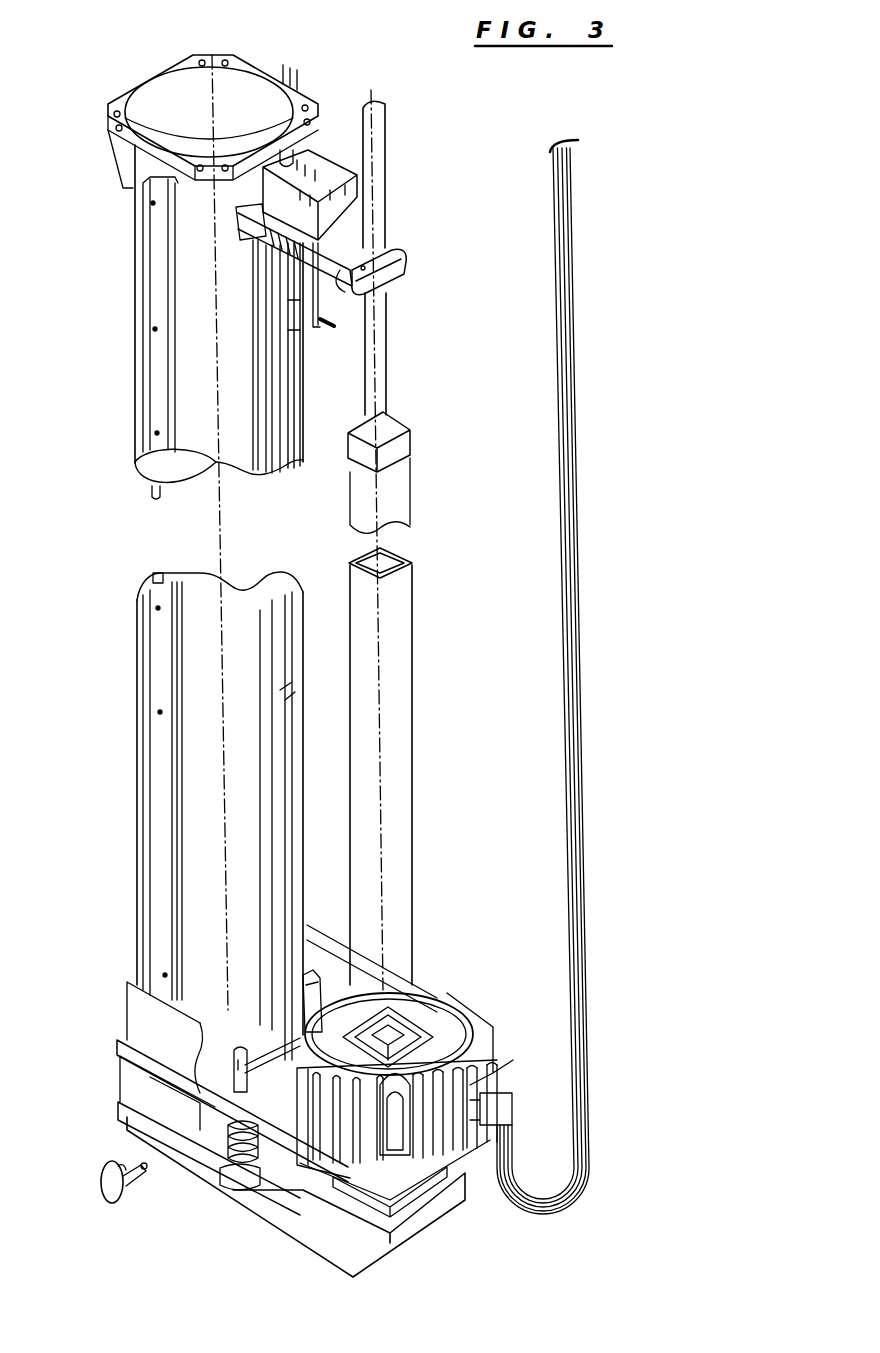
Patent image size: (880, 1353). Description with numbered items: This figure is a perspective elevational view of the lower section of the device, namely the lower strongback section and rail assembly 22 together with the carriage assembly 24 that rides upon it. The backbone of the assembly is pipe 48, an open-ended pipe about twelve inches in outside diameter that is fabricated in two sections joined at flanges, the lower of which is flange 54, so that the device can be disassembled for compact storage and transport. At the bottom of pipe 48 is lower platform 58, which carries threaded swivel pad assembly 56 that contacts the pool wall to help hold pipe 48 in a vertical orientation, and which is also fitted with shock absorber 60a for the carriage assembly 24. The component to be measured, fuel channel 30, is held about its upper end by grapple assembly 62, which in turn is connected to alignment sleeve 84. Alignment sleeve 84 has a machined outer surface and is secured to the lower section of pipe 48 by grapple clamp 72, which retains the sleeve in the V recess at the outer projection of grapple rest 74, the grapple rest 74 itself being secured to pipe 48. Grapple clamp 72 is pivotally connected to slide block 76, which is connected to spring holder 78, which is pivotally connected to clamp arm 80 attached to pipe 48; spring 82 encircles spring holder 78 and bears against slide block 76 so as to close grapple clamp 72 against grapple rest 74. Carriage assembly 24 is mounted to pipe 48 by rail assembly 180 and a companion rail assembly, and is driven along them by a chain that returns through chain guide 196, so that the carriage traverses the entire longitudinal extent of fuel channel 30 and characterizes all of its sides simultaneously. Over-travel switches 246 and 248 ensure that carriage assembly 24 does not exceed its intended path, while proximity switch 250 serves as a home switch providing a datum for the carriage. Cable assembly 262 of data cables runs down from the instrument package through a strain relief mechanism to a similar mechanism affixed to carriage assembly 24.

The lower strongback section and rail assembly 22 is at (106, 566).
The carriage assembly 24 is at (522, 1067).
The fuel channel 30 is at (413, 654).
The pipe 48 is at (135, 357).
The flange 54 is at (108, 122).
The threaded swivel pad assembly 56 is at (102, 1182).
The lower platform 58 is at (437, 1223).
The shock absorber 60a is at (228, 1190).
The grapple assembly 62 is at (412, 428).
The grapple clamp 72 is at (408, 258).
The grapple rest 74 is at (330, 158).
The slide block 76 is at (386, 296).
The spring holder 78 is at (292, 262).
The clamp arm 80 is at (243, 220).
The spring 82 is at (278, 247).
The alignment sleeve 84 is at (387, 154).
The rail assembly 180 is at (137, 779).
The chain guide 196 is at (278, 410).
The over-travel switch 246 is at (305, 332).
The over-travel switch 248 is at (310, 992).
The proximity switch 250 is at (236, 1045).
The cable assembly 262 is at (566, 399).